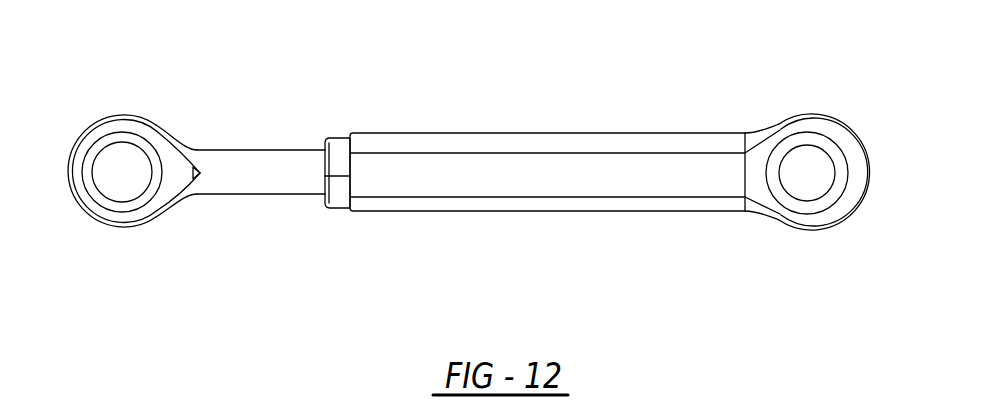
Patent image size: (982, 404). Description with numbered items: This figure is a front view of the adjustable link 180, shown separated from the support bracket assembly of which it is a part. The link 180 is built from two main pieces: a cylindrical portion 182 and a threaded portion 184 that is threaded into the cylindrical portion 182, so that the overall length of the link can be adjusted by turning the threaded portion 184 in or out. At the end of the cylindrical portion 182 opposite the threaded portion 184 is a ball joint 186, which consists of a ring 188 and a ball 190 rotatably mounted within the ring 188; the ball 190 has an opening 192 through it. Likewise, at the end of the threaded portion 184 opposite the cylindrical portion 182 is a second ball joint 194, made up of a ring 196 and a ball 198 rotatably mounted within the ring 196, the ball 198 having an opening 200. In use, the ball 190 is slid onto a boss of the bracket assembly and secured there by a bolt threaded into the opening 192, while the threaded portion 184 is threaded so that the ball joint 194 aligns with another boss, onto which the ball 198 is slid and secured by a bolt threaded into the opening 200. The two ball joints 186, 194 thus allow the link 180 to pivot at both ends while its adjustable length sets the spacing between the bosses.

The adjustable link 180 is at (583, 83).
The cylindrical portion 182 is at (548, 202).
The threaded portion 184 is at (248, 186).
The ball joint 186 is at (768, 217).
The ring 188 is at (807, 222).
The ball 190 is at (838, 162).
The opening 192 is at (796, 150).
The ball joint 194 is at (163, 121).
The ring 196 is at (130, 220).
The ball 198 is at (104, 142).
The opening 200 is at (110, 187).